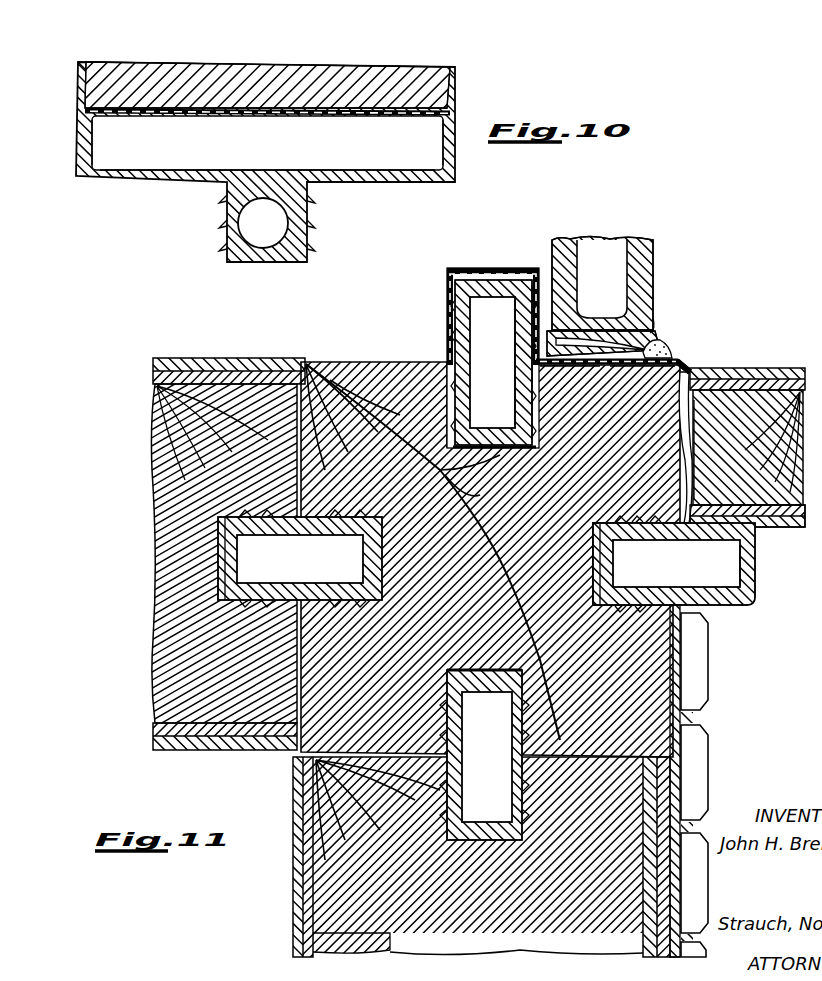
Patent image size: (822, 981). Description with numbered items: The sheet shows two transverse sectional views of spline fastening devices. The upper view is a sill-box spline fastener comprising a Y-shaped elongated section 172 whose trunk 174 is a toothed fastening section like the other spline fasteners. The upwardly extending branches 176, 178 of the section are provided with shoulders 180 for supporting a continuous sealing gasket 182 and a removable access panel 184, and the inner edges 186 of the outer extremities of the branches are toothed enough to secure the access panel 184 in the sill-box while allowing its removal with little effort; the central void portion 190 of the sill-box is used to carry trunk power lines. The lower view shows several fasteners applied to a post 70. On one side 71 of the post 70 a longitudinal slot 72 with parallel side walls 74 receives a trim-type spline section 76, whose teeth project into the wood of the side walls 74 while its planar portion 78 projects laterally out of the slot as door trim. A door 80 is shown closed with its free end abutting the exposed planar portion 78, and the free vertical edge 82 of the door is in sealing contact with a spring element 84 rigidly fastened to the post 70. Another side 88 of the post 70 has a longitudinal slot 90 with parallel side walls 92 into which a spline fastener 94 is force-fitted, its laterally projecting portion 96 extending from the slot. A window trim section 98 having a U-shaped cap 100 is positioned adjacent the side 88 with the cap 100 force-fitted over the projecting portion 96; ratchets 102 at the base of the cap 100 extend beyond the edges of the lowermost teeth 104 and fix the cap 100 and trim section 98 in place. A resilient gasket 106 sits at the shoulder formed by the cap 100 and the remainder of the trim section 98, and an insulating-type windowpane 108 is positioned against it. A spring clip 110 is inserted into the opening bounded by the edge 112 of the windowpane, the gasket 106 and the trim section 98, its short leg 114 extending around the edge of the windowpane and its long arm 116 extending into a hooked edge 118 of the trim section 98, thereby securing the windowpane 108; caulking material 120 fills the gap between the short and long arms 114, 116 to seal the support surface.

In FIG. 10, the Y-shaped elongated section 172 is at (459, 76).
In FIG. 10, the trunk 174 is at (284, 250).
In FIG. 10, the upwardly extending branch 176 is at (96, 140).
In FIG. 10, the upwardly extending branch 178 is at (445, 152).
In FIG. 10, the shoulders 180 is at (452, 112).
In FIG. 10, the continuous sealing gasket 182 is at (258, 116).
In FIG. 10, the removable access panel 184 is at (364, 62).
In FIG. 10, the inner edges 186 is at (90, 62).
In FIG. 10, the central void portion 190 is at (345, 152).
In FIG. 11, the post 70 is at (610, 437).
In FIG. 11, the side 71 is at (680, 470).
In FIG. 11, the longitudinal slot 72 is at (596, 571).
In FIG. 11, the side walls 74 is at (600, 520).
In FIG. 11, the trim-type spline section 76 is at (756, 586).
In FIG. 11, the planar portion 78 is at (745, 608).
In FIG. 11, the door 80 is at (765, 528).
In FIG. 11, the free vertical edge 82 is at (700, 431).
In FIG. 11, the spring element 84 is at (700, 464).
In FIG. 11, the side 88 is at (400, 362).
In FIG. 11, the longitudinal slot 90 is at (533, 451).
In FIG. 11, the side walls 92 is at (452, 432).
In FIG. 11, the spline fastener 94 is at (520, 378).
In FIG. 11, the laterally projecting portion 96 is at (463, 326).
In FIG. 11, the window trim section 98 is at (447, 296).
In FIG. 11, the U-shaped cap 100 is at (507, 262).
In FIG. 11, the ratchets 102 is at (532, 358).
In FIG. 11, the lowermost teeth 104 is at (517, 341).
In FIG. 11, the resilient gasket 106 is at (570, 368).
In FIG. 11, the insulating-type windowpane 108 is at (655, 250).
In FIG. 11, the spring clip 110 is at (653, 306).
In FIG. 11, the edge 112 is at (624, 311).
In FIG. 11, the short leg 114 is at (660, 326).
In FIG. 11, the long arm 116 is at (645, 370).
In FIG. 11, the hooked edge 118 is at (683, 360).
In FIG. 11, the caulking material 120 is at (666, 345).